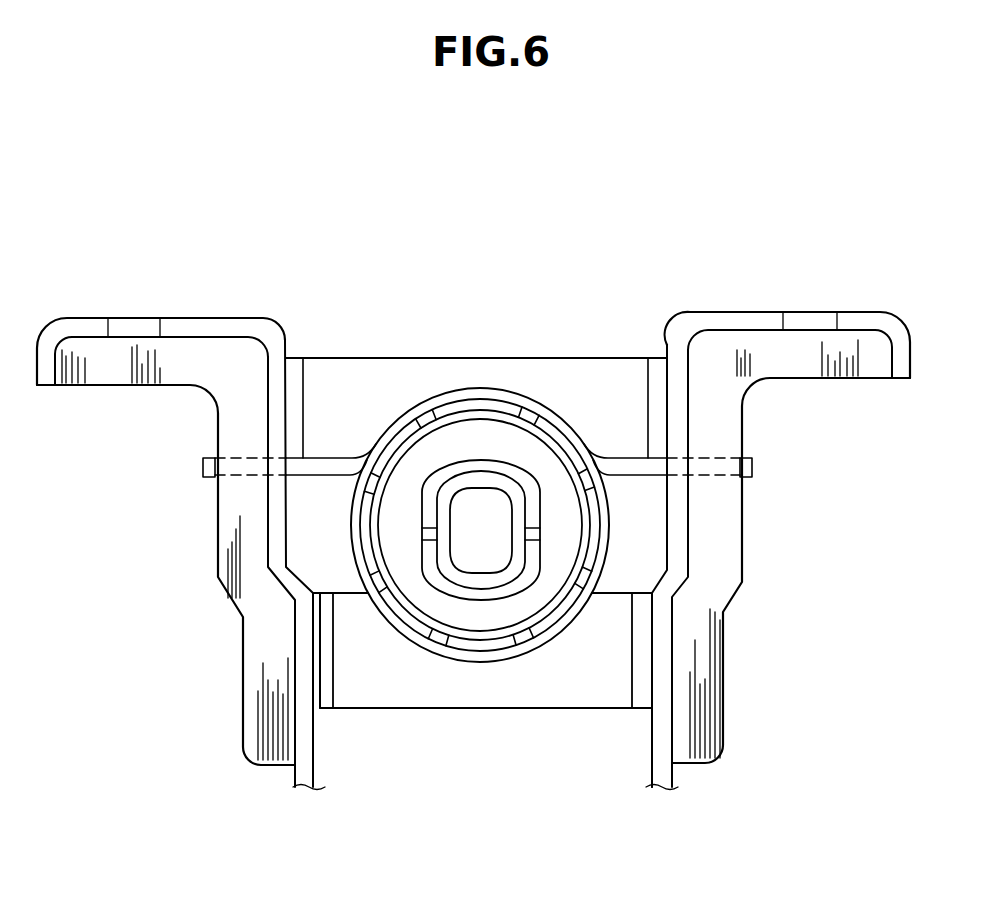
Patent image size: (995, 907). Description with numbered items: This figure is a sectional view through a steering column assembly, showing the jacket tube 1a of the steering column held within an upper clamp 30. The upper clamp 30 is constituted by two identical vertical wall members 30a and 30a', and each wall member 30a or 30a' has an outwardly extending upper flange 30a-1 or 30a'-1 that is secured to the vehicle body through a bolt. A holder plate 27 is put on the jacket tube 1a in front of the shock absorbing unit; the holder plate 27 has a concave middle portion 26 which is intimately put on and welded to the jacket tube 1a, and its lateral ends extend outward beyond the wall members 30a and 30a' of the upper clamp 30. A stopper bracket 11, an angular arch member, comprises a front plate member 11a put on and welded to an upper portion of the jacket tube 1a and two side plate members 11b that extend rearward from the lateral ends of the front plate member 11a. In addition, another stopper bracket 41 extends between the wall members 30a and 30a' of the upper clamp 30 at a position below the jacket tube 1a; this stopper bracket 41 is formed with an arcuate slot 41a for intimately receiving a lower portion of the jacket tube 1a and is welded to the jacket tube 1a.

The upper flange 30a'-1 is at (161, 332).
The vertical wall member 30a' is at (291, 540).
The upper clamp 30 is at (750, 516).
The upper flange 30a-1 is at (763, 310).
The vertical wall member 30a is at (666, 540).
The stopper bracket 11 is at (463, 508).
The front plate member 11a is at (422, 367).
The side plate member 11b is at (293, 365).
The concave middle portion 26 is at (497, 410).
The holder plate 27 is at (752, 458).
The jacket tube 1a is at (610, 522).
The stopper bracket 41 is at (542, 692).
The arcuate slot 41a is at (467, 660).